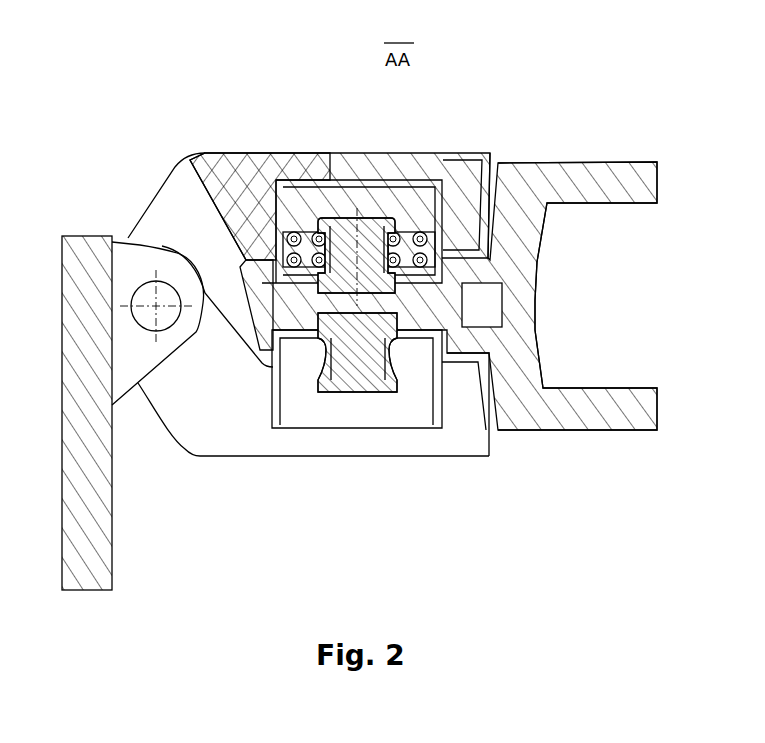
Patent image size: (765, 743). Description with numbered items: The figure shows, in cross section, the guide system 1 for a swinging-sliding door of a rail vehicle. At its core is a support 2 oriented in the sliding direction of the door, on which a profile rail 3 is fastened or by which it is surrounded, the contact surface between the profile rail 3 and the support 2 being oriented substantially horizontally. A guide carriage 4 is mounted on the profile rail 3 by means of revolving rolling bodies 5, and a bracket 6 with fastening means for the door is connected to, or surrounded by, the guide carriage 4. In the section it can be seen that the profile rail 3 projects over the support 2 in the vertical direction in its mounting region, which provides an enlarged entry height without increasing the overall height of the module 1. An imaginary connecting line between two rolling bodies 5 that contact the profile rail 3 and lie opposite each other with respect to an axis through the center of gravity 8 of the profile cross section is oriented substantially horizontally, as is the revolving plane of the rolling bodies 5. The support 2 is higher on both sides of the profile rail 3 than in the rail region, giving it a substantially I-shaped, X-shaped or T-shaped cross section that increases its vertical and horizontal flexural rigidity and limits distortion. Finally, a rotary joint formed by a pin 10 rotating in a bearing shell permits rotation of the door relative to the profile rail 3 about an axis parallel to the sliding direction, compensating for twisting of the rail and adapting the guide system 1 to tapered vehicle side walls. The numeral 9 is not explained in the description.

The guide system 1 is at (628, 91).
The support 2 is at (573, 398).
The profile rail 3 is at (357, 222).
The guide carriage 4 is at (308, 183).
The rolling bodies 5 is at (193, 160).
The bracket 6 is at (463, 162).
The center of gravity 8 is at (368, 223).
The potting compound 9 is at (262, 213).
The pin 10 is at (147, 297).